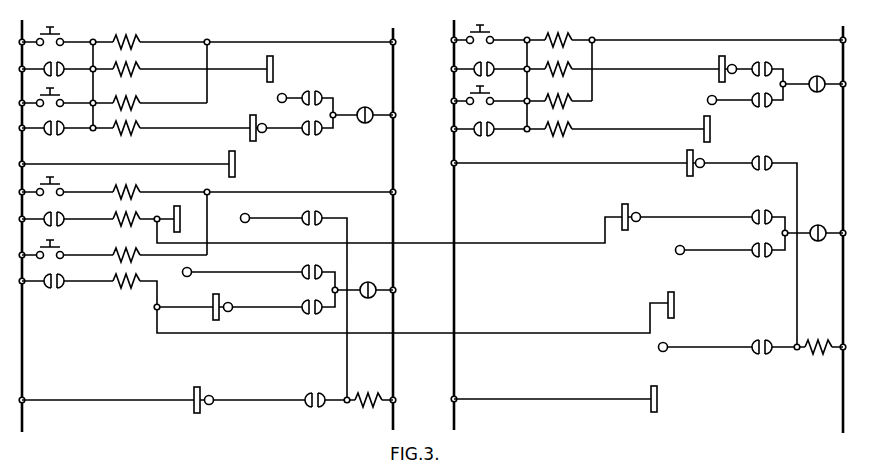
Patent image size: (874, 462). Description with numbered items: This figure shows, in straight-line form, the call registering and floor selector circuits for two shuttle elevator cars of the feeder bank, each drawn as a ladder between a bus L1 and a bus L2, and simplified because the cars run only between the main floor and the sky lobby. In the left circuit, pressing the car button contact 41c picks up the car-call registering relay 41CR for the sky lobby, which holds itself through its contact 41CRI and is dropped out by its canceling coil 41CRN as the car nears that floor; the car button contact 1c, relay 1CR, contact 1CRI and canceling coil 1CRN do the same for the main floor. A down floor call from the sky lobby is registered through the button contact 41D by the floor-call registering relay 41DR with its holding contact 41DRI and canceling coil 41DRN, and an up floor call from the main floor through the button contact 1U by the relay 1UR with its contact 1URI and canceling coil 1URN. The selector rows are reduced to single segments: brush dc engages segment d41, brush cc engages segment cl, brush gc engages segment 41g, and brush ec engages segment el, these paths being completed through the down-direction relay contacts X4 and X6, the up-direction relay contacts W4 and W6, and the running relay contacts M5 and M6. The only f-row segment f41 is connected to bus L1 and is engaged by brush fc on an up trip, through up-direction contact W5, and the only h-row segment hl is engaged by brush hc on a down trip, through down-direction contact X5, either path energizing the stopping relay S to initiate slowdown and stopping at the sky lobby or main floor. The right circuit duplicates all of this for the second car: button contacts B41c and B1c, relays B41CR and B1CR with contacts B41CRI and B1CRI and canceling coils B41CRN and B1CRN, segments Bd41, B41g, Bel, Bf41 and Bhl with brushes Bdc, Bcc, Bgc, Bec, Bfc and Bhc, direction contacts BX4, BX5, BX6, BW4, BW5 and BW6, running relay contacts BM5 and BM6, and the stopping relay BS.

The bus L1 is at (22, 38).
The bus L2 is at (392, 36).
The car button contact 41c is at (55, 32).
The car-call registering relay 41CR is at (133, 37).
The car-call registering relay contact 41CRI is at (38, 69).
The canceling coil 41CRN is at (133, 63).
The car button contact 1c is at (58, 93).
The car-call registering relay 1CR is at (130, 97).
The car-call registering relay contact 1CRI is at (51, 126).
The canceling coil 1CRN is at (133, 122).
The contact segment d41 is at (269, 63).
The brush dc is at (284, 93).
The down-direction relay contact X4 is at (316, 92).
The running relay contact M5 is at (361, 107).
The brush cc is at (264, 124).
The contact segment cl is at (252, 122).
The up-direction relay contact W4 is at (312, 136).
The contact segment f41 is at (233, 157).
The down floor button contact 41D is at (58, 182).
The floor-call registering relay 41DR is at (133, 188).
The floor-call registering relay contact 41DRI is at (38, 219).
The canceling coil 41DRN is at (126, 226).
The contact segment 41g is at (171, 213).
The up floor button contact 1U is at (56, 244).
The floor-call registering relay 1UR is at (131, 248).
The floor-call registering relay contact 1URI is at (51, 283).
The canceling coil 1URN is at (121, 289).
The brush gc is at (188, 277).
The brush fc is at (249, 214).
The up-direction relay contact W5 is at (315, 213).
The down-direction relay contact X6 is at (316, 265).
The running relay contact M6 is at (372, 275).
The contact segment el is at (213, 318).
The brush ec is at (228, 312).
The up-direction relay contact W6 is at (304, 315).
The contact segment hl is at (197, 391).
The brush hc is at (211, 395).
The down-direction relay contact X5 is at (313, 393).
The floor or corridor-call stopping relay S is at (373, 394).
The car button contact B41c is at (488, 33).
The car-call registering relay B41CR is at (567, 37).
The car-call registering relay contact B41CRI is at (466, 66).
The canceling coil B41CRN is at (559, 75).
The car button contact B1c is at (489, 94).
The car-call registering relay B1CR is at (574, 104).
The car-call registering relay contact B1CRI is at (476, 136).
The canceling coil B1CRN is at (562, 136).
The contact segment Bd41 is at (716, 63).
The brush Bdc is at (734, 64).
The down-direction relay contact BX4 is at (765, 64).
The running relay contact BM5 is at (819, 69).
The brush Bcc is at (712, 86).
The up-direction relay contact BW4 is at (762, 107).
The contact segment Bf41 is at (686, 153).
The brush Bfc is at (702, 158).
The up-direction relay contact BW5 is at (762, 157).
The contact segment B41g is at (626, 207).
The brush Bgc is at (638, 212).
The down-direction relay contact BX6 is at (760, 208).
The running relay contact BM6 is at (822, 217).
The brush Bec is at (680, 245).
The up-direction relay contact BW6 is at (762, 257).
The contact segment Bel is at (669, 294).
The brush Bhc is at (665, 342).
The down-direction relay contact BX5 is at (760, 341).
The floor or corridor-call stopping relay BS is at (823, 339).
The contact segment Bhl is at (650, 388).